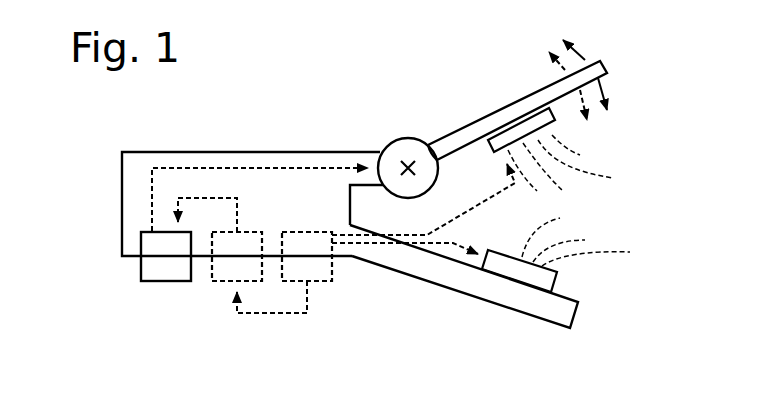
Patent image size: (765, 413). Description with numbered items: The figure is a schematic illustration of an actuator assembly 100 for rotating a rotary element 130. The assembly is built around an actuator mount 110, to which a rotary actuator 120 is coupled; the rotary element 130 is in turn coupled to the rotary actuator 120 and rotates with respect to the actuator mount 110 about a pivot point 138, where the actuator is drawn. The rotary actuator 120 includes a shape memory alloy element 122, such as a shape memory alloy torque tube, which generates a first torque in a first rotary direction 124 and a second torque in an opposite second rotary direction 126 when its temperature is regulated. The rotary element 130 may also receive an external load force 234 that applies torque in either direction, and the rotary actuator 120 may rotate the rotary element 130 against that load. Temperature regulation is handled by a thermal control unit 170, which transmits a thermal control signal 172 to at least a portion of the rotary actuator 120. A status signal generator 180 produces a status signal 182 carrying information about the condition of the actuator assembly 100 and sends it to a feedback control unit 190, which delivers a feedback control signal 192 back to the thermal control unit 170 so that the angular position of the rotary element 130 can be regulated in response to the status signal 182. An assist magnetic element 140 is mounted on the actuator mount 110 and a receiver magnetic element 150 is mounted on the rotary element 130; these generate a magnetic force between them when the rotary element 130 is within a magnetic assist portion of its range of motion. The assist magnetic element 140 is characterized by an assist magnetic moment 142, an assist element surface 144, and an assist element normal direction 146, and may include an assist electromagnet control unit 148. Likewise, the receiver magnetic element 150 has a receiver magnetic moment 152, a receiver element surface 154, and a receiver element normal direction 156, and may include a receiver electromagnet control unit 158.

The actuator assembly 100 is at (276, 78).
The actuator mount 110 is at (262, 152).
The rotary actuator 120 is at (408, 134).
The shape memory alloy element 122 is at (425, 142).
The first rotary direction 124 is at (578, 50).
The second rotary direction 126 is at (607, 93).
The rotary element 130 is at (530, 97).
The pivot point 138 is at (410, 176).
The assist magnetic element 140 is at (558, 284).
The assist magnetic moment 142 is at (555, 269).
The assist element surface 144 is at (607, 252).
The assist element normal direction 146 is at (580, 241).
The assist electromagnet control unit 148 is at (562, 228).
The receiver magnetic element 150 is at (559, 130).
The receiver magnetic moment 152 is at (583, 156).
The receiver element surface 154 is at (598, 167).
The receiver element normal direction 156 is at (564, 175).
The receiver electromagnet control unit 158 is at (530, 184).
The thermal control unit 170 is at (141, 270).
The thermal control signal 172 is at (250, 170).
The status signal generator 180 is at (318, 284).
The status signal 182 is at (273, 314).
The feedback control unit 190 is at (225, 283).
The feedback control signal 192 is at (240, 210).
The external load force 234 is at (566, 71).